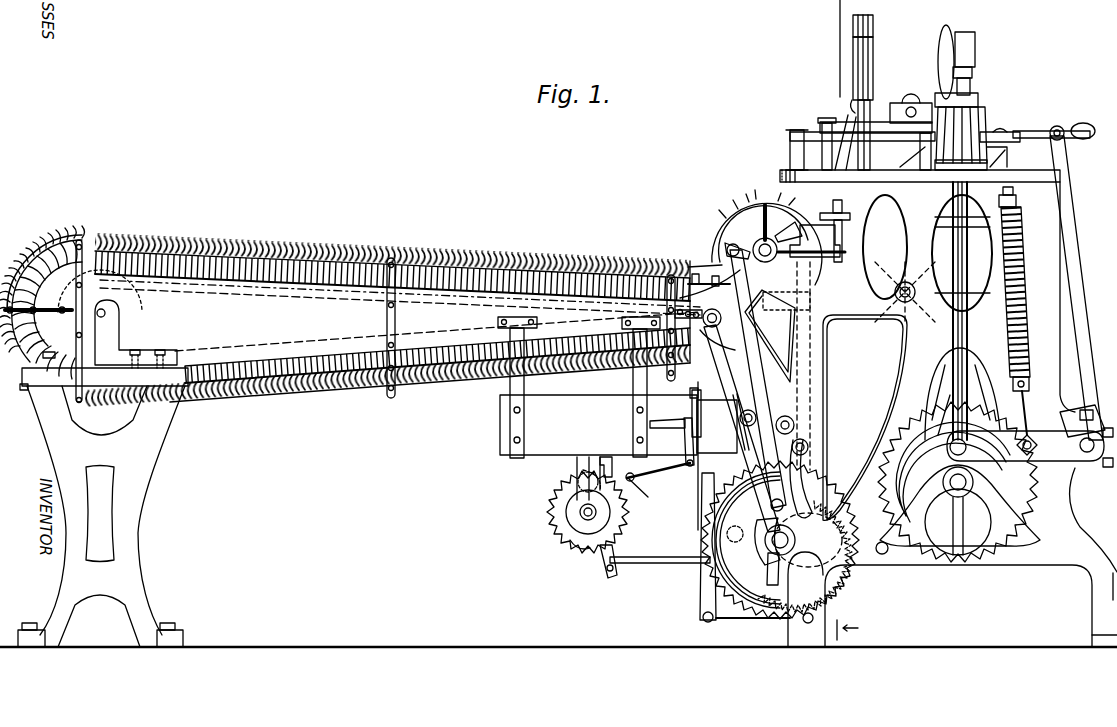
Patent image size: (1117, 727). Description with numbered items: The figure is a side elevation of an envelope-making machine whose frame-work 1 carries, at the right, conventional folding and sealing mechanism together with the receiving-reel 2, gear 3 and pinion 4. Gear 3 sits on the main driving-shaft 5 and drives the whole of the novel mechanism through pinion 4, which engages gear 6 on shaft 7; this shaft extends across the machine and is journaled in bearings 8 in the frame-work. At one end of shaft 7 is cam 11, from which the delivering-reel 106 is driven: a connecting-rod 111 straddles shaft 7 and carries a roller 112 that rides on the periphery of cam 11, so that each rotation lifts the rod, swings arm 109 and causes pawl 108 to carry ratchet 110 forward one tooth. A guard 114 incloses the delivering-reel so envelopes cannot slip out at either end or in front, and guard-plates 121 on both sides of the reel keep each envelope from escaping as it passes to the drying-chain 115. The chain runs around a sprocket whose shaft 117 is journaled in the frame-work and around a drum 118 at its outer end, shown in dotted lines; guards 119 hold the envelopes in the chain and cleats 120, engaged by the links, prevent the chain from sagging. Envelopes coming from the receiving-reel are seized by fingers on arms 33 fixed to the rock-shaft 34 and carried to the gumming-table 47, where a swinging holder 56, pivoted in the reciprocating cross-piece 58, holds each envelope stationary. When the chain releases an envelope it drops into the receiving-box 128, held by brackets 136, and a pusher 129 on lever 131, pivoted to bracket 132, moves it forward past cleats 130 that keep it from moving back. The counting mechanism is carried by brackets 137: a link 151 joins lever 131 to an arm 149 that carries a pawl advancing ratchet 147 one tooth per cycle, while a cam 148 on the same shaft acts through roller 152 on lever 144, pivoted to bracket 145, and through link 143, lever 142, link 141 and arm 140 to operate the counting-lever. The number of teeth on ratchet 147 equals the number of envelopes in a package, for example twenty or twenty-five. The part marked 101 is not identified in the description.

The frame-work 1 is at (931, 323).
The receiving-reel 2 is at (902, 282).
The gear 3 is at (1010, 525).
The pinion 4 is at (891, 580).
The main driving-shaft 5 is at (968, 483).
The gear 6 is at (780, 540).
The shaft 7 is at (788, 540).
The bearings 8 is at (772, 570).
The cam 11 is at (760, 530).
The arms 33 is at (798, 295).
The rock-shaft 34 is at (815, 449).
The gumming-table 47 is at (804, 252).
The swinging holder 56 is at (842, 243).
The reciprocating cross-piece 58 is at (820, 224).
The hub 101 is at (765, 262).
The delivering-reel 106 is at (797, 230).
The pawl 108 is at (764, 205).
The arm 109 is at (728, 222).
The ratchet 110 is at (748, 212).
The connecting-rod 111 is at (766, 408).
The roller 112 is at (790, 500).
The guard 114 is at (726, 245).
The drying-chain 115 is at (567, 260).
The shaft 117 is at (734, 371).
The drum 118 is at (130, 310).
The guards 119 is at (312, 244).
The cleats 120 is at (265, 290).
The guard-plates 121 is at (694, 265).
The receiving-box 128 is at (618, 425).
The pusher 129 is at (708, 398).
The cleats 130 is at (604, 457).
The lever 131 is at (728, 473).
The bracket 132 is at (700, 619).
The brackets 136 is at (508, 415).
The brackets 137 is at (575, 463).
The arm 140 is at (700, 402).
The link 141 is at (694, 400).
The lever 142 is at (736, 420).
The link 143 is at (688, 436).
The lever 144 is at (640, 476).
The bracket 145 is at (640, 490).
The ratchet 147 is at (573, 546).
The cam 148 is at (572, 503).
The arm 149 is at (613, 558).
The link 151 is at (663, 565).
The roller 152 is at (578, 478).